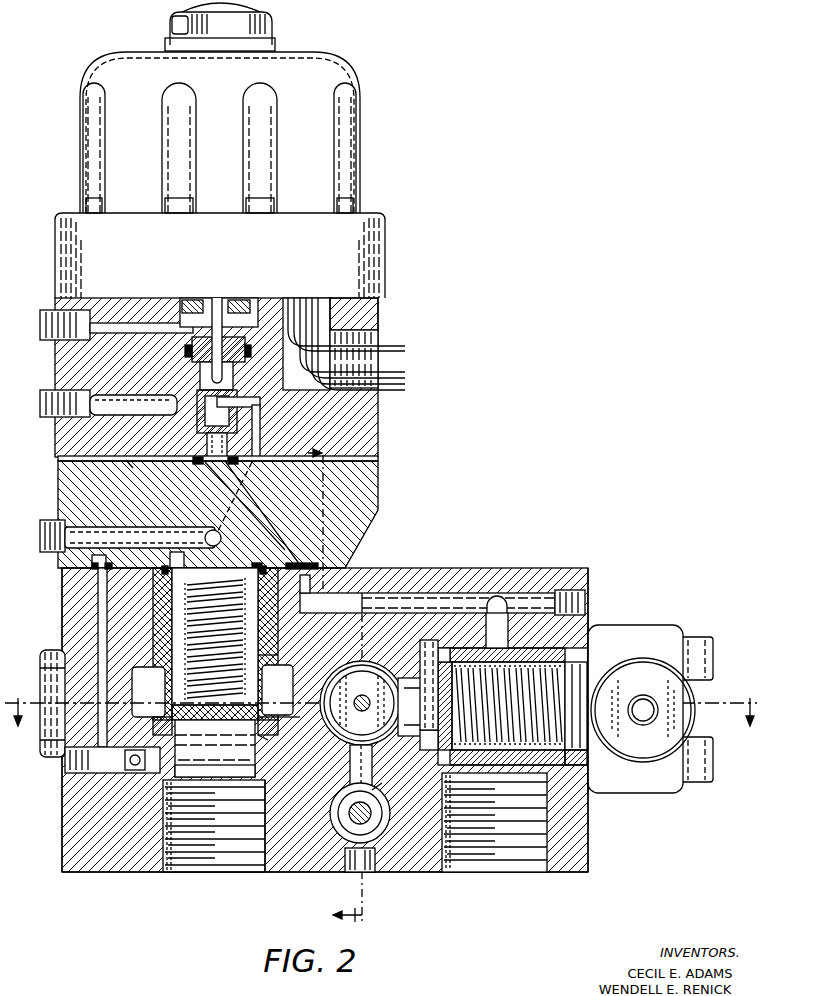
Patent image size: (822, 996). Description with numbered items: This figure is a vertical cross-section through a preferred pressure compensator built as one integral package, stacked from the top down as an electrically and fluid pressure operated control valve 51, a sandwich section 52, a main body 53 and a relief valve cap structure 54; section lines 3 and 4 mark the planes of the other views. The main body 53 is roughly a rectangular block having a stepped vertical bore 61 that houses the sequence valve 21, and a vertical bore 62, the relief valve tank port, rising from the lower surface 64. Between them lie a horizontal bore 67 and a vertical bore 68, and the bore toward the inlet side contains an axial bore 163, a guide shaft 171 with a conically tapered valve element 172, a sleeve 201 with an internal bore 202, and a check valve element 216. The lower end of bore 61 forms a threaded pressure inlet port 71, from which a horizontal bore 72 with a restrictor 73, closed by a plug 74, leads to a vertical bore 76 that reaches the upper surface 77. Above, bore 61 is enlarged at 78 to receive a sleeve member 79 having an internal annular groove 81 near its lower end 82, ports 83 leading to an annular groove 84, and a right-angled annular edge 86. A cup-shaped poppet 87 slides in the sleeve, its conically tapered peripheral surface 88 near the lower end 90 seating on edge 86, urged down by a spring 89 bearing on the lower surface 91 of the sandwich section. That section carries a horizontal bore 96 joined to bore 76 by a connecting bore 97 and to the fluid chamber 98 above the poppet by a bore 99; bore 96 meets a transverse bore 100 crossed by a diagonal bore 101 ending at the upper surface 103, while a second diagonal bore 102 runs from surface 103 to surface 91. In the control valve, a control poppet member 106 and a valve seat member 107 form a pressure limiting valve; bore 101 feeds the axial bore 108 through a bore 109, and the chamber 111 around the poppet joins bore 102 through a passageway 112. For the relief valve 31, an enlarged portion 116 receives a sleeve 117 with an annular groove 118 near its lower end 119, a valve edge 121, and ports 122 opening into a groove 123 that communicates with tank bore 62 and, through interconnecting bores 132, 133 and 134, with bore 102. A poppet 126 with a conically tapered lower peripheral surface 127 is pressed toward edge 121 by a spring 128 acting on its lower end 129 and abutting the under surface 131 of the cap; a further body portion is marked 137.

The section line 3- 3 is at (381, 723).
The section line 4- 4 is at (335, 676).
The sequence valve 21 is at (455, 335).
The relief valve 31 is at (635, 607).
The control valve 51 is at (360, 170).
The sandwich section 52 is at (378, 497).
The main body 53 is at (462, 566).
The relief valve cap structure 54 is at (657, 625).
The stepped vertical bore 61 is at (267, 810).
The vertical bore 62 is at (527, 848).
The lower surface 64 is at (293, 872).
The horizontal bore 67 is at (331, 833).
The vertical bore 68 is at (350, 770).
The pressure inlet port 71 is at (240, 860).
The horizontal bore 72 is at (113, 763).
The restrictor 73 is at (141, 768).
The plug 74 is at (62, 768).
The vertical bore 76 is at (101, 635).
The upper surface 77 is at (66, 583).
The enlarged bore portion 78 is at (278, 618).
The sleeve member 79 is at (168, 585).
The annular groove 81 is at (293, 710).
The lower end of sleeve 82 is at (242, 732).
The ports 83 is at (273, 662).
The annular groove 84 is at (294, 703).
The annular edge 86 is at (266, 735).
The poppet 87 is at (176, 640).
The conically tapered peripheral surface 88 is at (154, 720).
The spring 89 is at (190, 620).
The lower end of poppet 90 is at (211, 717).
The lower surface 91 is at (257, 566).
The horizontal bore 96 is at (129, 537).
The connecting bore 97 is at (105, 553).
The fluid chamber 98 is at (284, 565).
The bore 99 is at (178, 555).
The transverse horizontal bore 100 is at (210, 532).
The diagonal bore 101 is at (253, 478).
The second diagonal bore 102 is at (270, 522).
The upper surface 103 is at (130, 463).
The control poppet member 106 is at (203, 380).
The valve seat member 107 is at (229, 415).
The axial bore 108 is at (224, 398).
The bore 109 is at (258, 438).
The chamber 111 is at (196, 360).
The passageway 112 is at (207, 437).
The enlarged bore portion 116 is at (432, 742).
The sleeve 117 is at (517, 766).
The annular groove 118 is at (455, 768).
The lower end of sleeve 119 is at (430, 677).
The valve edge 121 is at (422, 762).
The ports 122 is at (450, 657).
The groove 123 is at (525, 640).
The poppet 126 is at (557, 766).
The conically tapered lower peripheral surface 127 is at (432, 660).
The spring 128 is at (586, 735).
The lower end of poppet 129 is at (356, 698).
The under surface 131 is at (585, 640).
The interconnecting bore 132 is at (305, 578).
The interconnecting bore 133 is at (427, 603).
The interconnecting bore 134 is at (497, 604).
The body wall 137 is at (588, 832).
The axial bore 163 is at (372, 668).
The guide shaft 171 is at (342, 672).
The conically tapered valve element 172 is at (358, 713).
The sleeve 201 is at (368, 823).
The internal bore 202 is at (372, 795).
The check valve element 216 is at (371, 823).